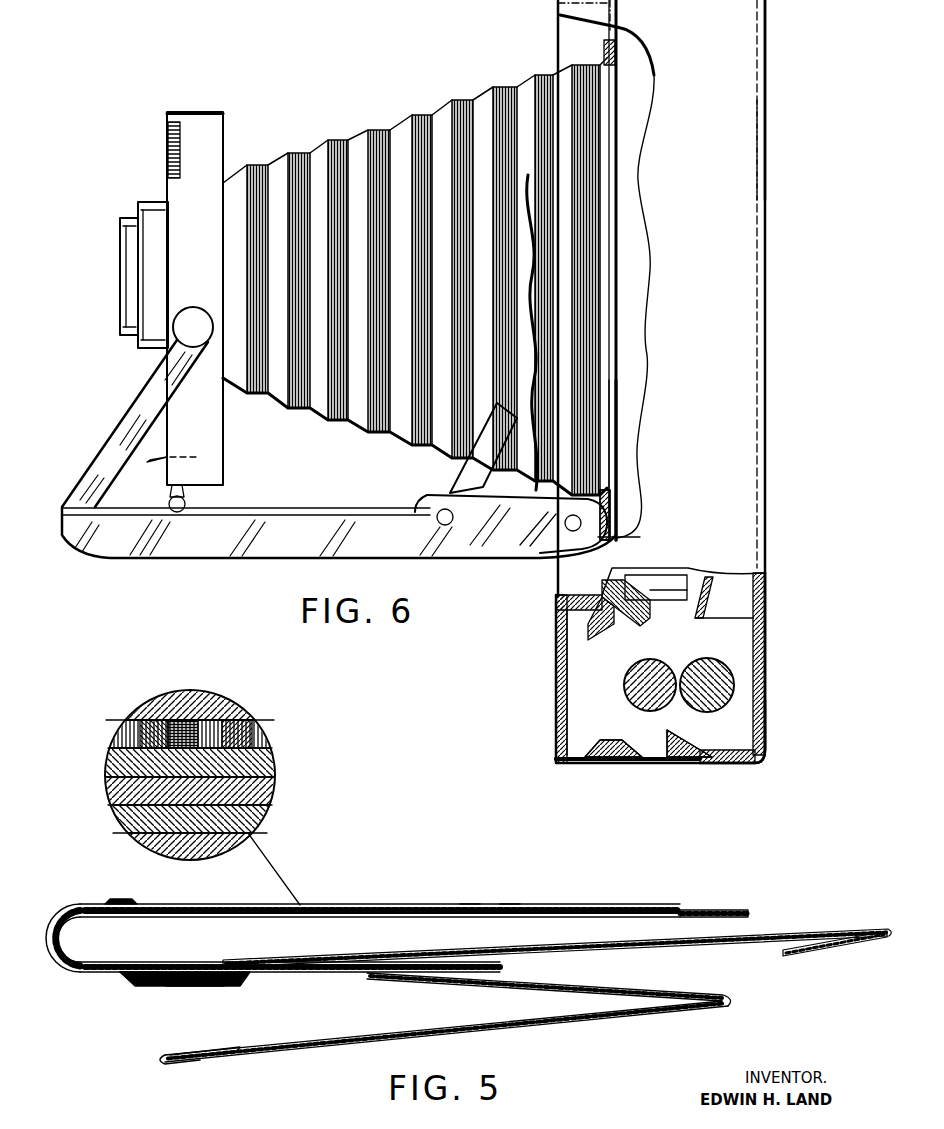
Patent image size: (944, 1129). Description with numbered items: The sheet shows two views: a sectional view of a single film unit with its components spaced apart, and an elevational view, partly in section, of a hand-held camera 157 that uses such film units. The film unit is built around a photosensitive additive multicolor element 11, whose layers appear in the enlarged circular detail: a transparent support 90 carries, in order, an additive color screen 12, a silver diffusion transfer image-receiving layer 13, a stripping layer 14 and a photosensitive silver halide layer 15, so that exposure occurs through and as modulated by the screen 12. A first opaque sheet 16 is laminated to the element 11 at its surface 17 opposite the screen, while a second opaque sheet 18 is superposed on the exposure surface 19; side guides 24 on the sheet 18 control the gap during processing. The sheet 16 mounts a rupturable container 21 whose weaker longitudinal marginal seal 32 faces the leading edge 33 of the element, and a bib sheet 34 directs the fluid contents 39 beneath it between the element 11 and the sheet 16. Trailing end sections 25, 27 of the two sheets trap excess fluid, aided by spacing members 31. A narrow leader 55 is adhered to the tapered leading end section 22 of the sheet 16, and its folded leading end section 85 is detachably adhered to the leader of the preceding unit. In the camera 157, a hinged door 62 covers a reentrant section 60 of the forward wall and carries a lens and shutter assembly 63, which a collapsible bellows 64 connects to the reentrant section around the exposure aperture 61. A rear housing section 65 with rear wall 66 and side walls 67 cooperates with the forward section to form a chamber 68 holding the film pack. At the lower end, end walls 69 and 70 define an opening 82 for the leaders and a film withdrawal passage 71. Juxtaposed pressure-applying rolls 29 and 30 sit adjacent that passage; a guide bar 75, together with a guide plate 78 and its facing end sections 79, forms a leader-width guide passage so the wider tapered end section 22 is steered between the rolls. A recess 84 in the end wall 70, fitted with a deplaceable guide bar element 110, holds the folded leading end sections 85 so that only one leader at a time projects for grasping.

In FIG. 6, the lens and shutter assembly 63 is at (168, 150).
In FIG. 6, the collapsible bellows 64 is at (360, 140).
In FIG. 6, the rear housing section 65 is at (766, 57).
In FIG. 6, the rear wall 66 is at (766, 150).
In FIG. 6, the side walls 67 is at (711, 138).
In FIG. 6, the chamber 68 is at (632, 370).
In FIG. 6, the aperture 61 is at (618, 453).
In FIG. 6, the reentrant section 60 is at (622, 510).
In FIG. 6, the hinged door 62 is at (384, 560).
In FIG. 6, the camera 157 is at (172, 560).
In FIG. 6, the end wall 69 is at (556, 672).
In FIG. 6, the guide bar 75 is at (714, 593).
In FIG. 6, the guide plate 78 is at (592, 636).
In FIG. 6, the facing end sections 79 is at (636, 620).
In FIG. 6, the pressure-applying roll 29 is at (655, 665).
In FIG. 6, the pressure-applying roll 30 is at (714, 708).
In FIG. 6, the recess 84 is at (630, 728).
In FIG. 6, the deplaceable guide bar element 110 is at (605, 742).
In FIG. 6, the opening 82 is at (578, 764).
In FIG. 6, the film withdrawal passage 71 is at (710, 760).
In FIG. 6, the end wall 70 is at (740, 764).
In FIG. 5, the support 90 is at (238, 700).
In FIG. 5, the additive multicolor screen 12 is at (270, 742).
In FIG. 5, the silver diffusion transfer image-receiving layer 13 is at (268, 760).
In FIG. 5, the stripping layer 14 is at (270, 790).
In FIG. 5, the photosensitive silver halide layer 15 is at (265, 820).
In FIG. 5, the first opaque sheet 16 is at (245, 835).
In FIG. 5, the photosensitive additive multicolor element 11 is at (409, 903).
In FIG. 5, the surface 17 is at (470, 903).
In FIG. 5, the exposure surface 19 is at (509, 903).
In FIG. 5, the trailing end section 25 is at (698, 909).
In FIG. 5, the bib sheet 34 is at (58, 912).
In FIG. 5, the leading edge 33 is at (112, 900).
In FIG. 5, the longitudinal marginal seal 32 is at (140, 965).
In FIG. 5, the fluid contents 39 is at (168, 986).
In FIG. 5, the rupturable container 21 is at (197, 987).
In FIG. 5, the tapered leading end section 22 is at (345, 972).
In FIG. 5, the leader 55 is at (760, 940).
In FIG. 5, the leading end section 85 is at (838, 942).
In FIG. 5, the second opaque sheet 18 is at (546, 1030).
In FIG. 5, the side guides 24 is at (455, 1026).
In FIG. 5, the spacing members 31 is at (190, 1050).
In FIG. 5, the trailing end section 27 is at (194, 1064).